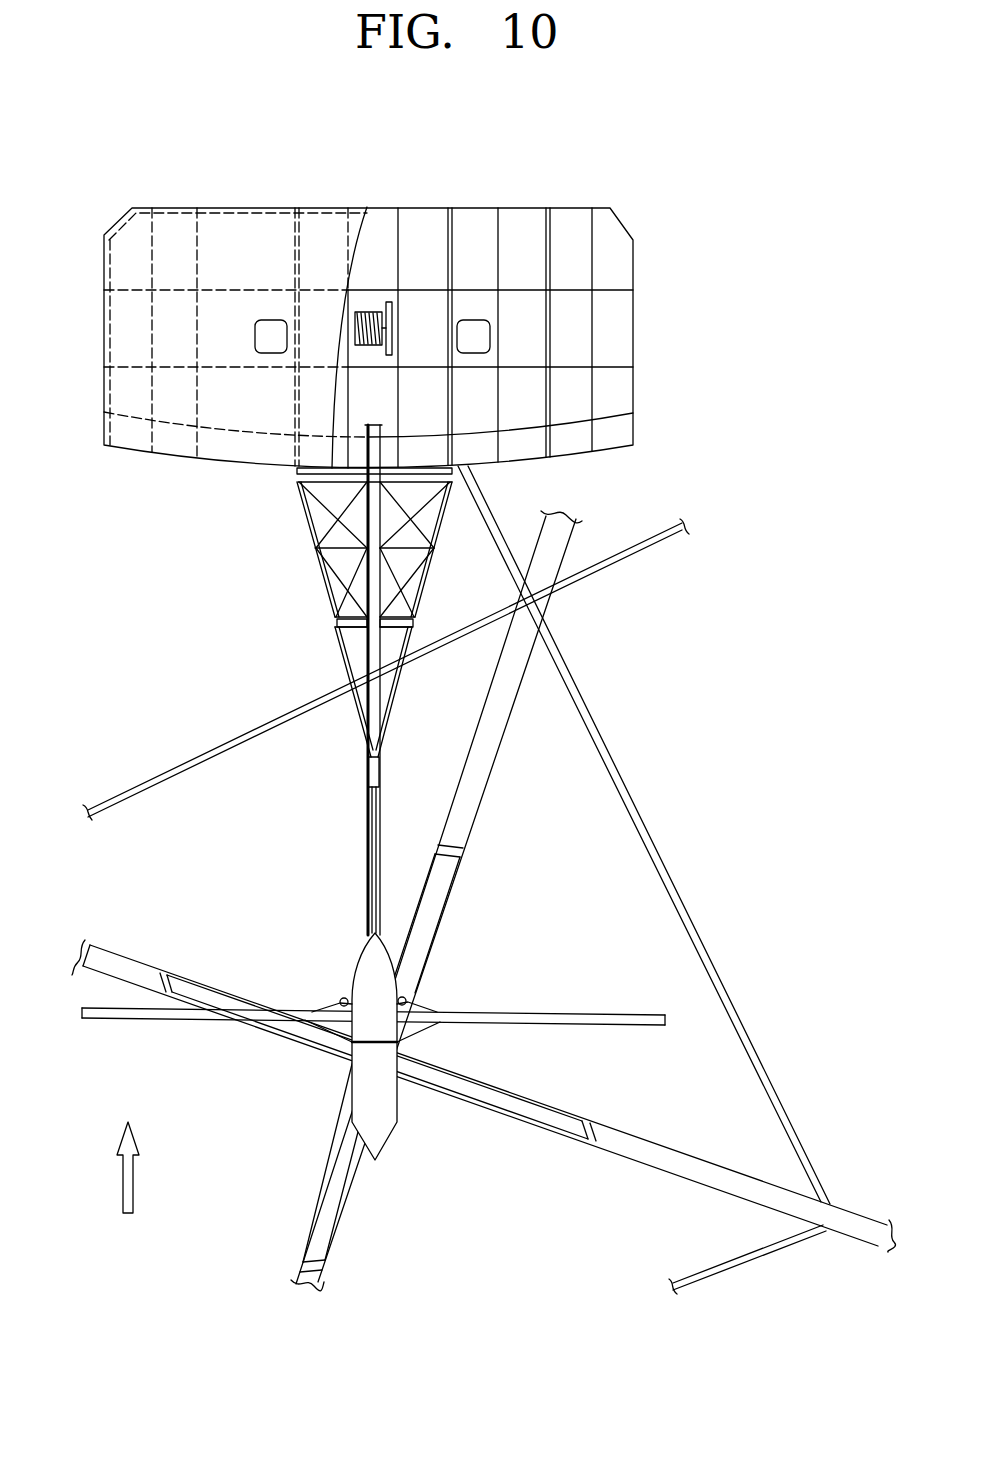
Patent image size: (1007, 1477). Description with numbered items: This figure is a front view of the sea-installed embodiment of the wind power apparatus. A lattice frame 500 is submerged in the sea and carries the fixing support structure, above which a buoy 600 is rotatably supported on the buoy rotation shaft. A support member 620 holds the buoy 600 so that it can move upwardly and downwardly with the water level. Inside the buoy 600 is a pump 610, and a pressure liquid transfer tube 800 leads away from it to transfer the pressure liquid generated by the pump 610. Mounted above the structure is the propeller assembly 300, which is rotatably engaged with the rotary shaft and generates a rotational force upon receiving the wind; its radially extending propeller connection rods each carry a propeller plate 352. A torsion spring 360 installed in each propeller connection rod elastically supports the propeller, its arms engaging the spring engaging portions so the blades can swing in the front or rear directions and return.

The propeller assembly 300 is at (338, 1070).
The propeller plate 352 is at (103, 1021).
The torsion spring 360 is at (322, 988).
The lattice frame 500 is at (124, 796).
The buoy 600 is at (230, 227).
The pump 610 is at (368, 312).
The support member 620 is at (297, 521).
The pressure liquid transfer tube 800 is at (124, 956).